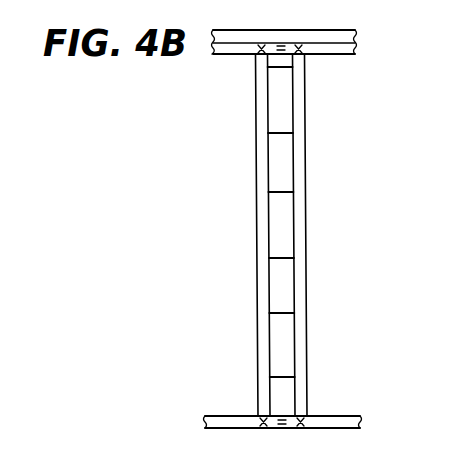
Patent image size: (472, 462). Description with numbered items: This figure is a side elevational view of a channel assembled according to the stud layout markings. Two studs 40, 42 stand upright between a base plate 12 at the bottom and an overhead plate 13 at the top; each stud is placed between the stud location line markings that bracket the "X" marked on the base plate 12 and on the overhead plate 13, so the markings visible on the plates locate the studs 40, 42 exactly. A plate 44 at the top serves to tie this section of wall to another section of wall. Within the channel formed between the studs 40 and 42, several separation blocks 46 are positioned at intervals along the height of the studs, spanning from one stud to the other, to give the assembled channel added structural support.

The plate 44 is at (351, 29).
The overhead plate 13 is at (352, 56).
The stud 40 is at (257, 288).
The stud 42 is at (308, 292).
The separation blocks 46 is at (272, 202).
The base plate 12 is at (345, 415).